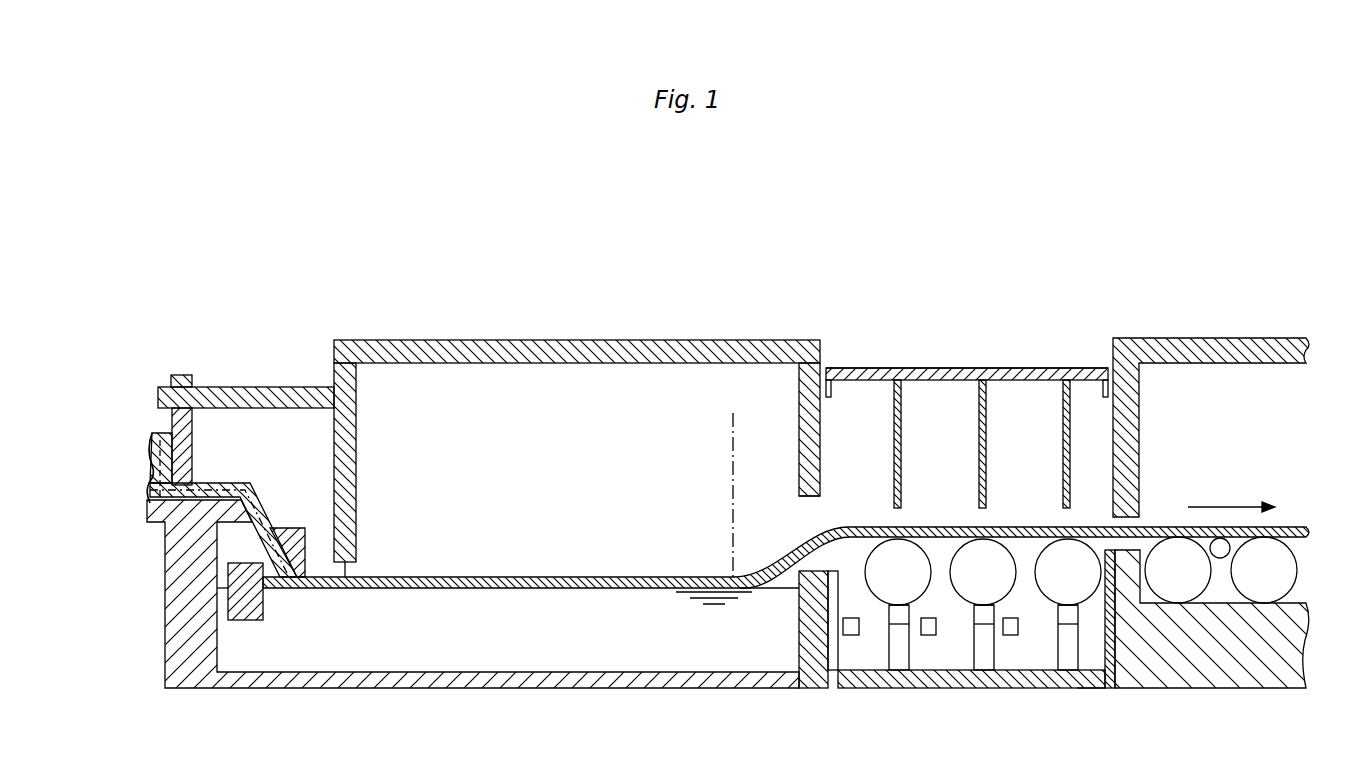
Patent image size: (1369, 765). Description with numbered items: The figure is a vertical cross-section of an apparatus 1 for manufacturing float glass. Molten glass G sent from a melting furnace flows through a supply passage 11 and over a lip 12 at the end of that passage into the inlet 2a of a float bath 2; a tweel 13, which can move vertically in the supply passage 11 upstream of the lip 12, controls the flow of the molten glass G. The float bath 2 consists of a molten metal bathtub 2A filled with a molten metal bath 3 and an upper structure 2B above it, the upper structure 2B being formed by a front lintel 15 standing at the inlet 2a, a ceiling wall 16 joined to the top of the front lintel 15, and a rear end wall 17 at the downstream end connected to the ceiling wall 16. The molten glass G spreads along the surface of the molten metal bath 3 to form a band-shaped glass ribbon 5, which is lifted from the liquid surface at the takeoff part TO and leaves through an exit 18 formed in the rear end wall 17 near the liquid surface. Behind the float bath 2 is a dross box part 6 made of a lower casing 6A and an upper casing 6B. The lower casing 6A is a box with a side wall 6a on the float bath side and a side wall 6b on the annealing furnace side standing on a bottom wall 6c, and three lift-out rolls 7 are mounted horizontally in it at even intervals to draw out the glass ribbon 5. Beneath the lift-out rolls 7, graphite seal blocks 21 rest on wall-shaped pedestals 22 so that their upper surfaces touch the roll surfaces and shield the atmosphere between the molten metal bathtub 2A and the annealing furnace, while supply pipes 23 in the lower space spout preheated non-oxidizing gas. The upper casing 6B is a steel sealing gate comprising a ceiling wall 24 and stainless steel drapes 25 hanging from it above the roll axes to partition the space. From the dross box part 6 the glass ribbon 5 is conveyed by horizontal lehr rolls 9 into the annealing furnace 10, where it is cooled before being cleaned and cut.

The apparatus for manufacturing a float glass 1 is at (857, 247).
The float bath 2 is at (461, 509).
The molten metal bathtub 2A is at (290, 688).
The upper structure 2B is at (500, 340).
The inlet 2a is at (323, 557).
The molten metal bath 3 is at (466, 655).
The glass ribbon 5 is at (607, 577).
The dross box part 6 is at (971, 519).
The lower casing 6A is at (962, 690).
The upper casing 6B is at (920, 363).
The side wall 6a is at (850, 657).
The side wall 6b is at (1103, 660).
The bottom wall 6c is at (1077, 687).
The lift-out rolls 7 is at (880, 600).
The lehr rolls 9 is at (1295, 572).
The annealing furnace 10 is at (1228, 336).
The supply passage 11 is at (150, 410).
The lip 12 is at (265, 520).
The tweel 13 is at (192, 435).
The front lintel 15 is at (356, 453).
The ceiling wall 16 is at (417, 340).
The rear end wall 17 is at (799, 398).
The exit 18 is at (808, 494).
The graphite seal blocks 21 is at (908, 612).
The wall-shaped pedestals 22 is at (905, 650).
The supply pipes 23 is at (852, 637).
The ceiling wall 24 is at (862, 368).
The stainless steel drapes 25 is at (900, 410).
The takeoff part TO is at (799, 461).
The molten glass G is at (237, 483).